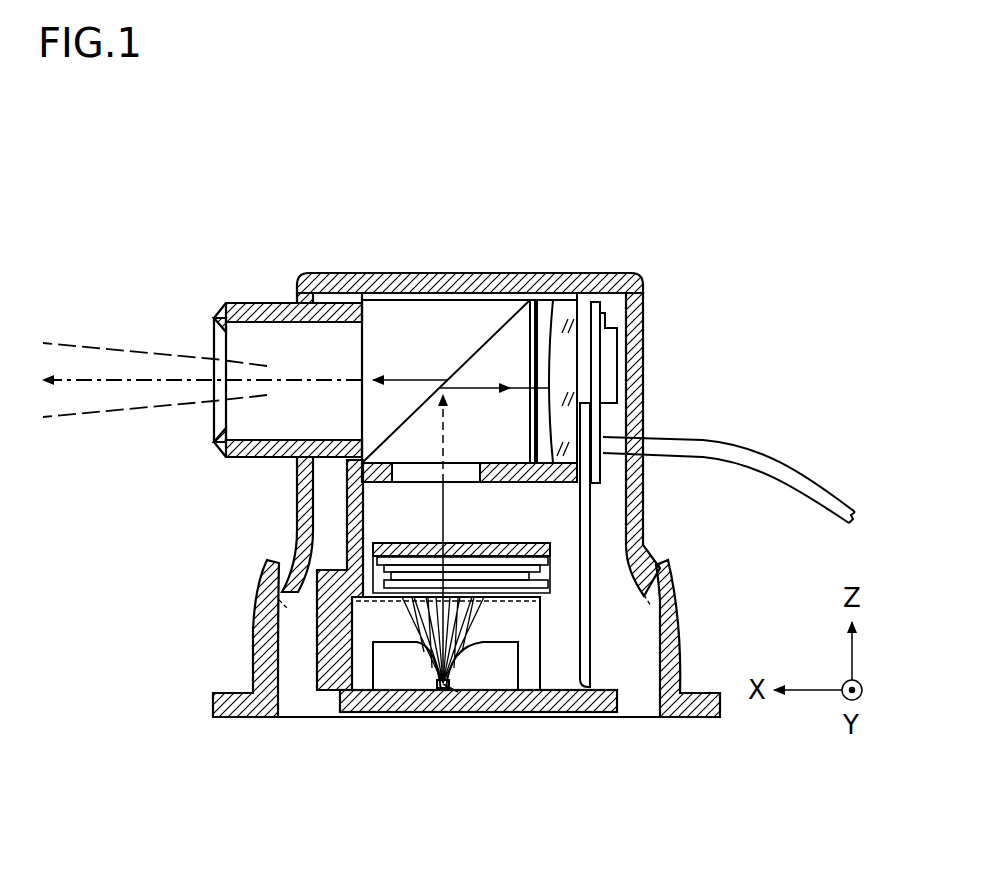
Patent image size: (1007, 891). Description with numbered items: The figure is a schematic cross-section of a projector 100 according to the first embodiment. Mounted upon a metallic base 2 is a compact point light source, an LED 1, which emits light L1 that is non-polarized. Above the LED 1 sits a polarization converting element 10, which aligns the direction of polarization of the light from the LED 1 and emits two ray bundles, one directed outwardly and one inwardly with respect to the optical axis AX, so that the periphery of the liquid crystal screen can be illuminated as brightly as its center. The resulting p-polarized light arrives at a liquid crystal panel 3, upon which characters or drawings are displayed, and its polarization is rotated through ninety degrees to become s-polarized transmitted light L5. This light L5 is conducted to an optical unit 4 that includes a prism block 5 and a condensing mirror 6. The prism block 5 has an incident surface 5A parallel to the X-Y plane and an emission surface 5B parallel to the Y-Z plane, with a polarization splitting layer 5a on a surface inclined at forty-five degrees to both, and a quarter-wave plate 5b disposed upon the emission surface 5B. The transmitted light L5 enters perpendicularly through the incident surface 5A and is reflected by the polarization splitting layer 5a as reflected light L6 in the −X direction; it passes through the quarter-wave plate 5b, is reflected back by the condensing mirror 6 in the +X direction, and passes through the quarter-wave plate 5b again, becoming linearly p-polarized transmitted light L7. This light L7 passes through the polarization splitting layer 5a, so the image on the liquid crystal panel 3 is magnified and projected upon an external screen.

The projector 100 is at (440, 178).
The optical unit 4 is at (489, 331).
The prism block 5 is at (458, 316).
The polarization splitting layer 5a is at (530, 303).
The quarter-wave plate 5b is at (549, 300).
The condensing mirror 6 is at (586, 354).
The incident surface of the prism block 5A is at (422, 468).
The emission surface of the prism block 5B is at (540, 367).
The liquid crystal panel 3 is at (543, 573).
The optical axis AX is at (449, 639).
The LED 1 is at (436, 684).
The polarization converting element 10 is at (542, 657).
The metallic base 2 is at (355, 706).
The light L1 is at (458, 692).
The transmitted light L5 is at (447, 518).
The reflected light L6 is at (477, 392).
The transmitted light L7 is at (405, 376).